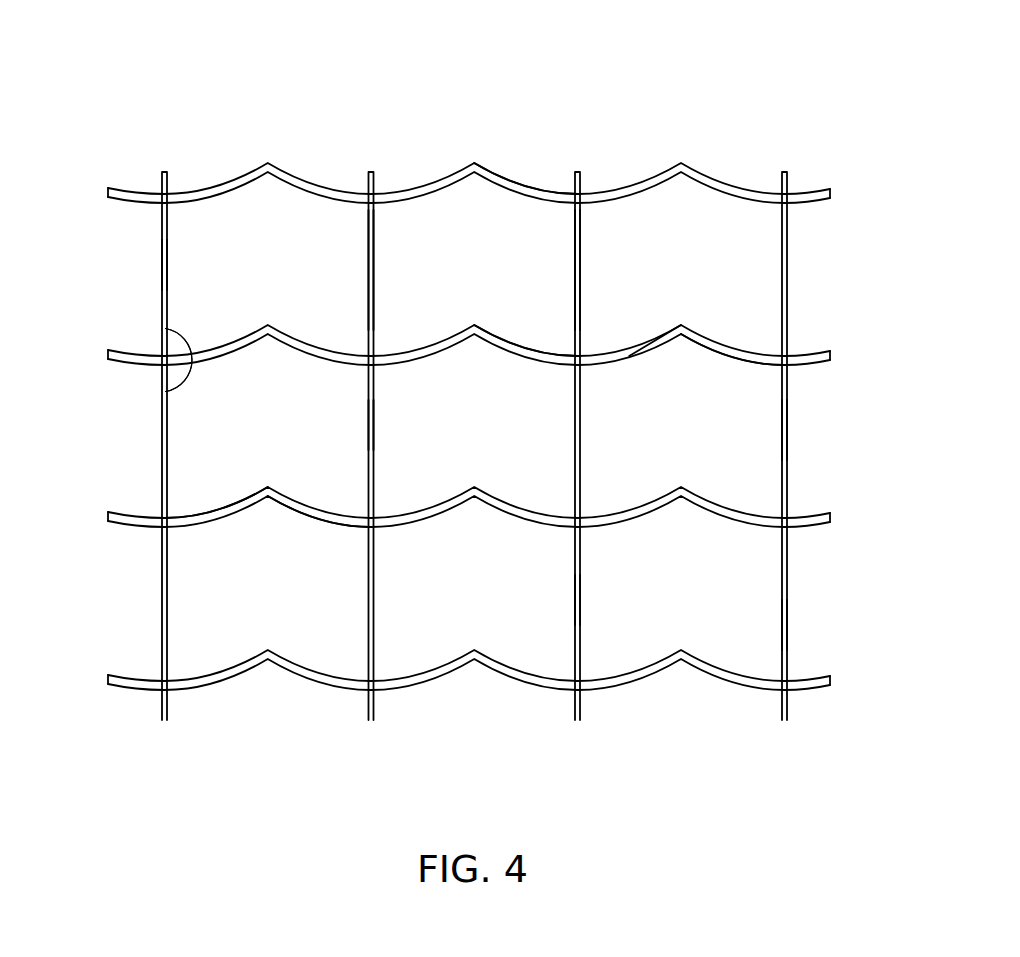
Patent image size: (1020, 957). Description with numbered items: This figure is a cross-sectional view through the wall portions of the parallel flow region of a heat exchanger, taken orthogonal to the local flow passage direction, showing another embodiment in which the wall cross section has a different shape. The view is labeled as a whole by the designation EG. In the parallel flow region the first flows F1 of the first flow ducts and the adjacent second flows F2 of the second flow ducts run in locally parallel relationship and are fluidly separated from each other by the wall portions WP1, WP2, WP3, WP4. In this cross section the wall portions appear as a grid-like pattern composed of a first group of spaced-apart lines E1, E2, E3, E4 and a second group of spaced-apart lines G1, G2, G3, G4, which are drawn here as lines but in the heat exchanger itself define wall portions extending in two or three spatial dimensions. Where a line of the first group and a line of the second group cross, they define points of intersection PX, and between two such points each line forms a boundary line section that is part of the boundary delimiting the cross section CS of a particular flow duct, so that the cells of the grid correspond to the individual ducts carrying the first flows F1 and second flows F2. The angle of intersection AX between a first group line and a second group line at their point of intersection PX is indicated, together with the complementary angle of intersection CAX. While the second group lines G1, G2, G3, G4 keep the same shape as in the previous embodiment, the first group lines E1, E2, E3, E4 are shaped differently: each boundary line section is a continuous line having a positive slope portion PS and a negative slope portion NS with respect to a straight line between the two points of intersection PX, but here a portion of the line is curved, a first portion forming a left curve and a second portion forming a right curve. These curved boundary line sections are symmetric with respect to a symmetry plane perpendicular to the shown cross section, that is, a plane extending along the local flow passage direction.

The electrode group EG is at (443, 404).
The points of intersection PX is at (168, 192).
The first group line E1 is at (745, 185).
The first group line E2 is at (745, 347).
The first group line E3 is at (745, 508).
The first group line E4 is at (745, 672).
The wall portion WP1 is at (515, 180).
The wall portion WP2 is at (378, 278).
The wall portion WP3 is at (543, 337).
The wall portion WP4 is at (588, 278).
The second group line G1 is at (157, 263).
The second group line G2 is at (365, 427).
The second group line G3 is at (573, 601).
The second group line G4 is at (777, 623).
The angle of intersection AX is at (177, 347).
The complementary angle of intersection CAX is at (177, 372).
The positive slope portion PS is at (647, 340).
The negative slope portion NS is at (717, 342).
The cross section CS is at (747, 430).
The first flows F1 is at (283, 277).
The second flows F2 is at (492, 277).